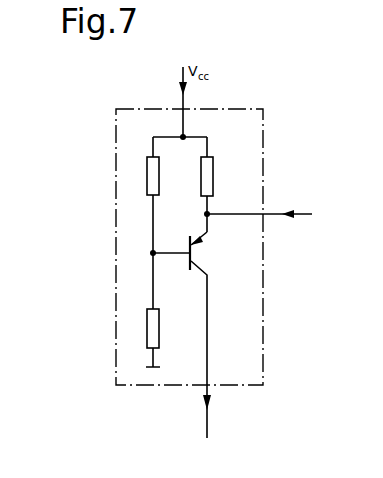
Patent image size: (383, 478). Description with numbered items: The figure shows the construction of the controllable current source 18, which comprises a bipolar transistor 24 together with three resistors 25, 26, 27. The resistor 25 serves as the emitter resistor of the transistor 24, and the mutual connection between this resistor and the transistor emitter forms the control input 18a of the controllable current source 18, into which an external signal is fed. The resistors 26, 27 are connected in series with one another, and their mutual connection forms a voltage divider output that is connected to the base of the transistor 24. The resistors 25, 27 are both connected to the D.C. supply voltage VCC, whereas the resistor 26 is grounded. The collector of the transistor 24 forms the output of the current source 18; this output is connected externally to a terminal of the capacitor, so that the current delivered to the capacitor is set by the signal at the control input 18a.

The controllable current source 18 is at (253, 361).
The control input 18a is at (266, 214).
The bipolar transistor 24 is at (202, 261).
The resistor 25 is at (207, 188).
The resistor 26 is at (156, 327).
The resistor 27 is at (150, 172).